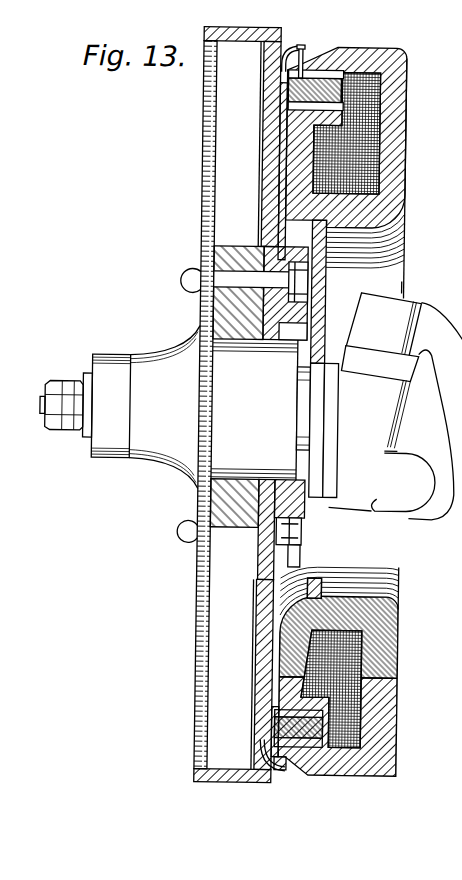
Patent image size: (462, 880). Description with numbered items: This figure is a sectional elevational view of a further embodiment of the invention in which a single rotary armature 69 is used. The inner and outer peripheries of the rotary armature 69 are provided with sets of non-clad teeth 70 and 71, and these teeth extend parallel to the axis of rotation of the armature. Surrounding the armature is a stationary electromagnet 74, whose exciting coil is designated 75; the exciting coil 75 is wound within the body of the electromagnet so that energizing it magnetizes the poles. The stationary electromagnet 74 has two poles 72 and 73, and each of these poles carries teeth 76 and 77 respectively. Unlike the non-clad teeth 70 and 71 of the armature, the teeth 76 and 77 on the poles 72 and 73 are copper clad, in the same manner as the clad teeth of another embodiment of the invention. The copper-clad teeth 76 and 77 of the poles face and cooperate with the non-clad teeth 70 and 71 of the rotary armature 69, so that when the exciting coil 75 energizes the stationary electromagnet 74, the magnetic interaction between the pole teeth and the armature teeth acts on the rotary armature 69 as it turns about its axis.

The rotary armature 69 is at (265, 98).
The non-clad teeth 70 is at (256, 87).
The non-clad teeth 71 is at (353, 78).
The pole 72 is at (309, 67).
The pole 73 is at (279, 152).
The stationary electromagnet 74 is at (386, 120).
The exciting coil 75 is at (356, 160).
The copper-clad teeth 76 is at (294, 60).
The copper-clad teeth 77 is at (341, 74).